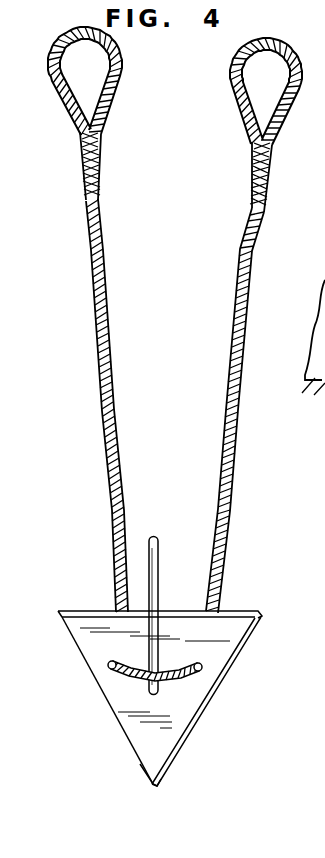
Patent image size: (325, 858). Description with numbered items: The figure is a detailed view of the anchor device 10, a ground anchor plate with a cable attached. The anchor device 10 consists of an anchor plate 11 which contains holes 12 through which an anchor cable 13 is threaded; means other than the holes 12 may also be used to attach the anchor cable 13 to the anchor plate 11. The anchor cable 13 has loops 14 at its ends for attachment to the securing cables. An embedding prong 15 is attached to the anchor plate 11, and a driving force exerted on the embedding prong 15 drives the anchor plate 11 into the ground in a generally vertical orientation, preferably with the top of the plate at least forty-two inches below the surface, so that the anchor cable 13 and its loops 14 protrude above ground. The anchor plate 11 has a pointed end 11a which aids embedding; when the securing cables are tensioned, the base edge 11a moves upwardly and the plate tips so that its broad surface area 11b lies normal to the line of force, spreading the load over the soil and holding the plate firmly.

The anchor device 10 is at (262, 563).
The anchor plate 11 is at (258, 615).
The pointed end 11a is at (150, 770).
The broad surface area 11b is at (100, 640).
The holes 12 is at (108, 677).
The anchor cable 13 is at (108, 323).
The loops 14 is at (118, 88).
The embedding prong 15 is at (160, 540).